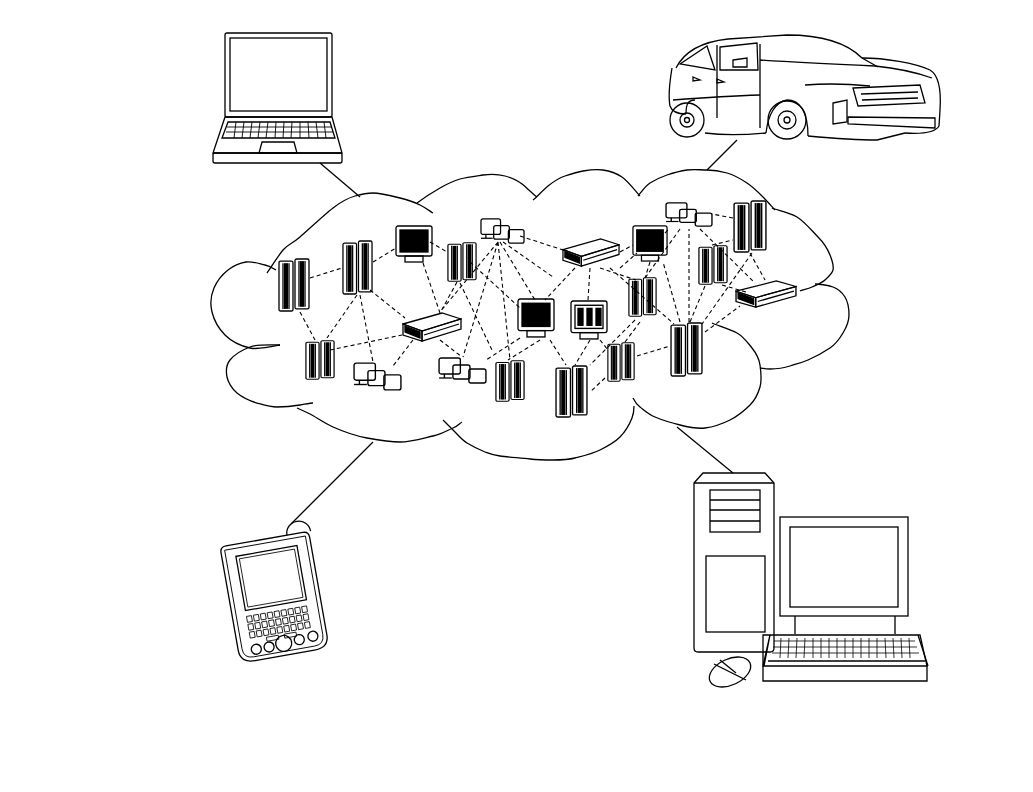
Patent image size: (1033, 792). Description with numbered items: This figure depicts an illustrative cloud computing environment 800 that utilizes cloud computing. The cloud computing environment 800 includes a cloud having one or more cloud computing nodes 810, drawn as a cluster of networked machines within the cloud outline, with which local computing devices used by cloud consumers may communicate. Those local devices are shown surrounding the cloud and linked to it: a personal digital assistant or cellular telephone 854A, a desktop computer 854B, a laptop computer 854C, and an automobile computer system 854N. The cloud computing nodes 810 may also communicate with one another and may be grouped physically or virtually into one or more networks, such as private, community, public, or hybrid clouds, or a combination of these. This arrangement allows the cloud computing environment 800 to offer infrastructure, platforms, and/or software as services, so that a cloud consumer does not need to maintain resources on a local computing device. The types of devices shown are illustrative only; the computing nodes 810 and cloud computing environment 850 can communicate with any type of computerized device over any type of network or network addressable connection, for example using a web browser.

The cloud computing environment 800 is at (96, 58).
The cloud computing nodes 810 is at (800, 319).
The cloud computing environment 850 is at (846, 291).
The personal digital assistant or cellular telephone 854A is at (323, 590).
The desktop computer 854B is at (843, 517).
The laptop computer 854C is at (333, 82).
The automobile computer system 854N is at (670, 94).